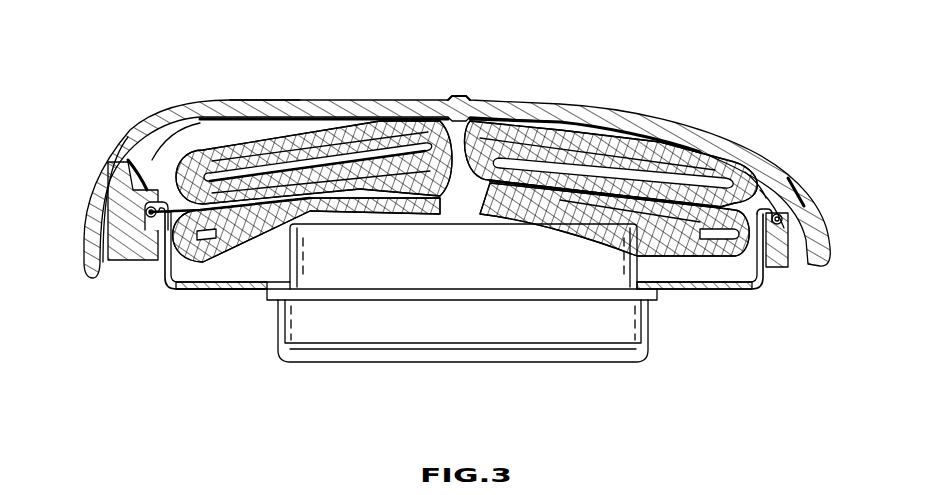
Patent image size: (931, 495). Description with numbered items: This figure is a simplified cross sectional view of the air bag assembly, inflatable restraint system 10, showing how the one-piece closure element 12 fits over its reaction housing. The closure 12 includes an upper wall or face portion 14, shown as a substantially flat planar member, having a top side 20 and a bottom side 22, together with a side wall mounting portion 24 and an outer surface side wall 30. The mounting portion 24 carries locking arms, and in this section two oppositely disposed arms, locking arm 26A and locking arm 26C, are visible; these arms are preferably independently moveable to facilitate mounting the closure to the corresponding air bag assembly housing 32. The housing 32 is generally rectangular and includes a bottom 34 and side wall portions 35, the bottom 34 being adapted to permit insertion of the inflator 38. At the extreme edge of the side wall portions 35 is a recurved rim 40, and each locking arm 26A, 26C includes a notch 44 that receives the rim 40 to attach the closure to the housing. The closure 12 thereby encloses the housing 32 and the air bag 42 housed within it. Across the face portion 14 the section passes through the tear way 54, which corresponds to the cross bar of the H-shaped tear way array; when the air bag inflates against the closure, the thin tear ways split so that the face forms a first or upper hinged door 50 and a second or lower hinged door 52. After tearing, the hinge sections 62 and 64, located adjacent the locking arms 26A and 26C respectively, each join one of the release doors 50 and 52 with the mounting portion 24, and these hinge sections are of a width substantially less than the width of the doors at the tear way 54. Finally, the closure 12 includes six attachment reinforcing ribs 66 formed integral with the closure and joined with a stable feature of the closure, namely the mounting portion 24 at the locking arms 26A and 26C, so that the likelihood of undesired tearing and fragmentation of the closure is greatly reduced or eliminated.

The air bag assembly, inflatable restraint system 10 is at (150, 332).
The closure element 12 is at (193, 108).
The face portion 14 is at (273, 102).
The top side 20 is at (536, 118).
The bottom side 22 is at (316, 120).
The side wall mounting portion 24 is at (130, 267).
The locking arm 26A is at (160, 265).
The locking arm 26C is at (783, 268).
The outer surface side wall 30 is at (817, 260).
The air bag assembly housing 32 is at (690, 290).
The bottom 34 is at (250, 290).
The side wall portions 35 is at (765, 286).
The inflator 38 is at (482, 262).
The recurved rim 40 is at (146, 192).
The air bag 42 is at (382, 157).
The notch 44 is at (146, 212).
The first or upper hinged door 50 is at (250, 108).
The second or lower hinged door 52 is at (601, 110).
The tear way 54 is at (463, 103).
The hinge section 62 is at (133, 133).
The hinge section 64 is at (762, 182).
The attachment reinforcing ribs 66 is at (152, 137).